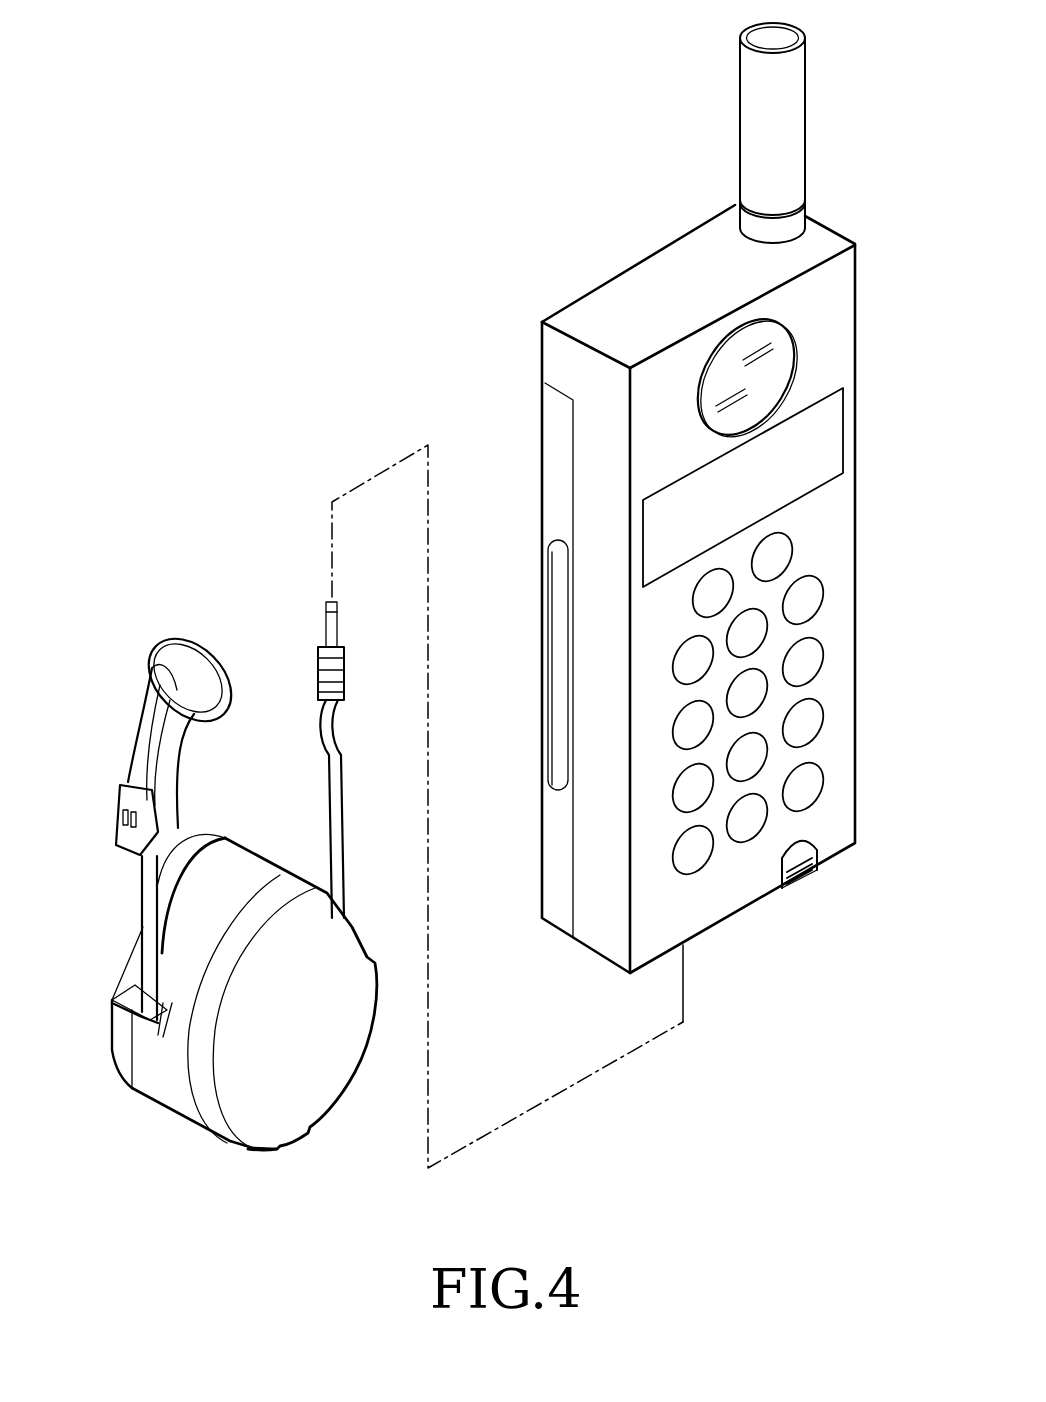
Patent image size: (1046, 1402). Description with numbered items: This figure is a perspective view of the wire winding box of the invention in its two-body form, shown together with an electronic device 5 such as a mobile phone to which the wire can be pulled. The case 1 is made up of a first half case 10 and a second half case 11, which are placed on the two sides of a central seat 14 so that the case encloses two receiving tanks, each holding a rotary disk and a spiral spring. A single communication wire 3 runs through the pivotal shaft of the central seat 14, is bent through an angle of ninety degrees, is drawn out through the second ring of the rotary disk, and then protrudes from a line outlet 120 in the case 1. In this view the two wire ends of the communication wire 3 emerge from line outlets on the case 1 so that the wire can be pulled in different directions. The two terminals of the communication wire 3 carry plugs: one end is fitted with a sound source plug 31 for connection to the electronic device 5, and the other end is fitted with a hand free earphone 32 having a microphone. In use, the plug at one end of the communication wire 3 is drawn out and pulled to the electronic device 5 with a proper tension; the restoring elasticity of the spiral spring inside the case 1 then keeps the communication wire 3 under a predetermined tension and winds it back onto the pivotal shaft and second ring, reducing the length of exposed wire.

The case 1 is at (312, 797).
The communication wire 3 is at (335, 820).
The mobile phone 5 is at (835, 517).
The first half case 10 is at (280, 890).
The second half case 11 is at (203, 843).
The central seat 14 is at (240, 862).
The sound source plug 31 is at (336, 632).
The hand free earphone 32 is at (185, 647).
The line outlet 120 is at (136, 1020).